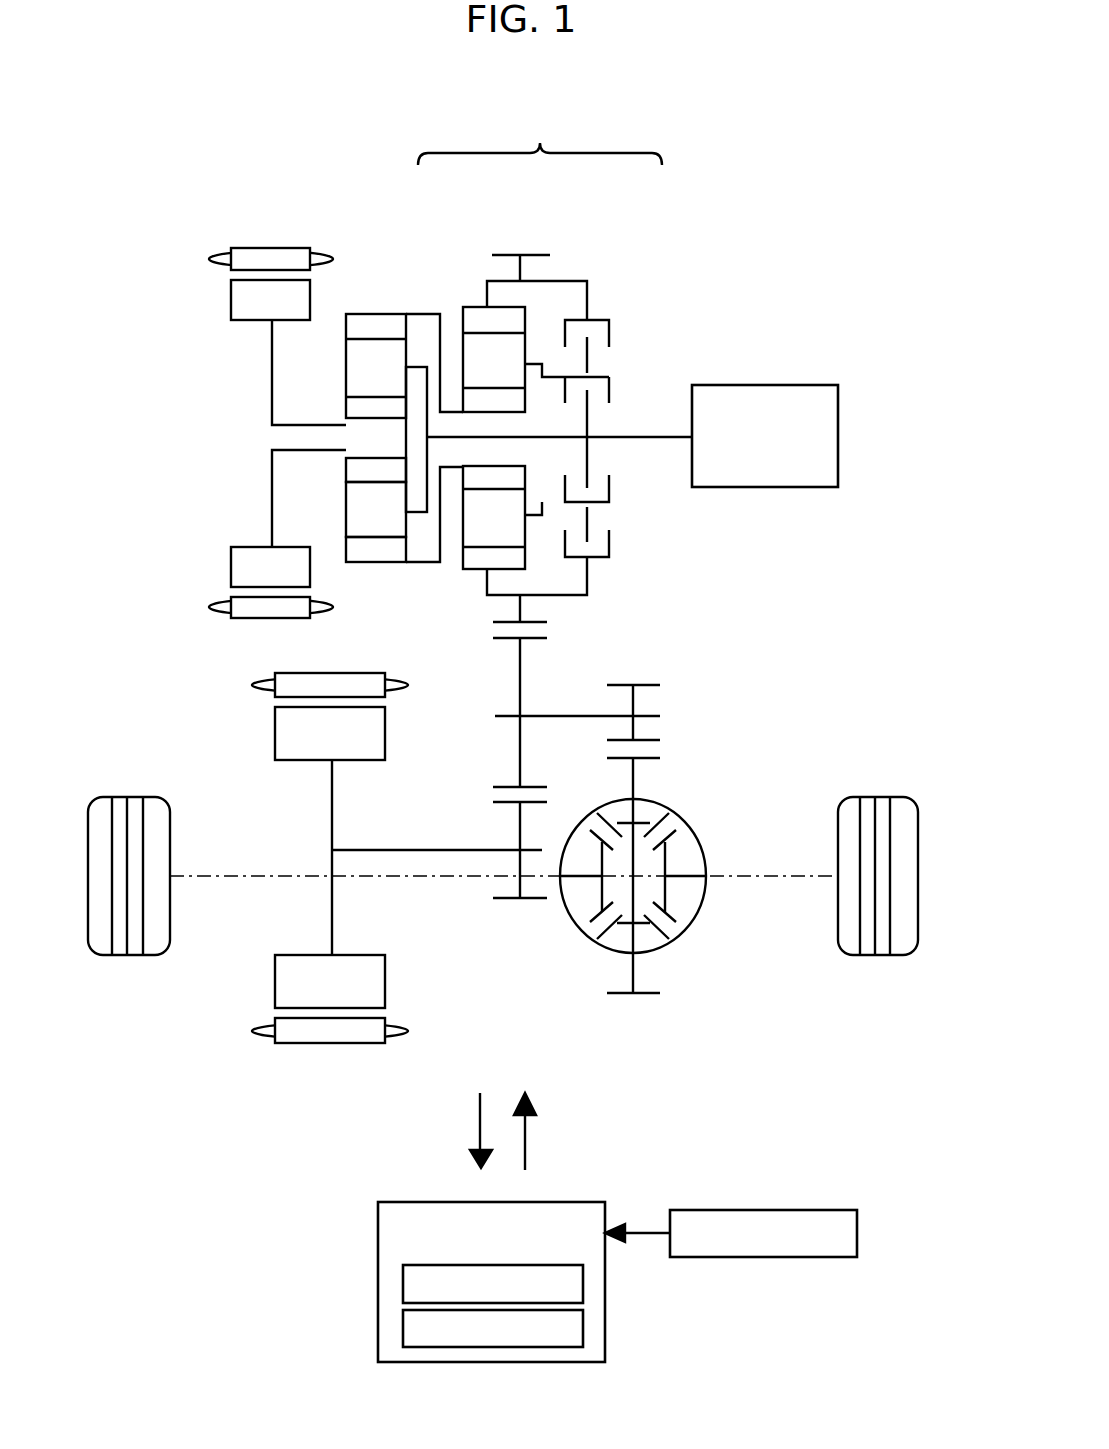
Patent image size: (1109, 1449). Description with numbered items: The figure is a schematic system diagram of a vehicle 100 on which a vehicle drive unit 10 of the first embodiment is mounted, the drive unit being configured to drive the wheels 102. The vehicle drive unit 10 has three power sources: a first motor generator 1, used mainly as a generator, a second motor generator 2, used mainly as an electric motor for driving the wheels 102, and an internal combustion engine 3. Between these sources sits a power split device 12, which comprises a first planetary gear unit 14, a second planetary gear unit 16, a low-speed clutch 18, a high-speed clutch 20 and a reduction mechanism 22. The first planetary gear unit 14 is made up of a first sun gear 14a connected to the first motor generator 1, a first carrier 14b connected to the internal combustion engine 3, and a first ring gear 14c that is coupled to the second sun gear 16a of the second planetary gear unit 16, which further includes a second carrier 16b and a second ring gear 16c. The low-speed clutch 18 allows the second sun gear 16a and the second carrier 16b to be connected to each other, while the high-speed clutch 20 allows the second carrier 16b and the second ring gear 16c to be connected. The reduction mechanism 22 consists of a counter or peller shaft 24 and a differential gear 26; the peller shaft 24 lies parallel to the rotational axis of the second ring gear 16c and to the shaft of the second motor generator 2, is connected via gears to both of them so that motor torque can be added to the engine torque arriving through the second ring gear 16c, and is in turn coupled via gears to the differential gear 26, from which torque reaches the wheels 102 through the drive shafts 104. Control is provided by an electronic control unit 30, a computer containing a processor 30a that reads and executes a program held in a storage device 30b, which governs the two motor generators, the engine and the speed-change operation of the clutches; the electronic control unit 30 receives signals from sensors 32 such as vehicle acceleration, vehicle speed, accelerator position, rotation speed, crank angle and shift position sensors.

The vehicle 100 is at (823, 157).
The vehicle drive unit 10 is at (767, 288).
The power split device 12 is at (540, 136).
The first motor generator 1 is at (241, 248).
The second motor generator 2 is at (275, 728).
The internal combustion engine 3 is at (818, 385).
The first planetary gear unit 14 is at (324, 369).
The first sun gear 14a is at (379, 459).
The first carrier 14b is at (370, 500).
The first ring gear 14c is at (372, 540).
The second planetary gear unit 16 is at (498, 537).
The second sun gear 16a is at (478, 403).
The second carrier 16b is at (476, 530).
The second ring gear 16c is at (486, 558).
The low-speed clutch 18 is at (615, 378).
The high-speed clutch 20 is at (602, 309).
The reduction mechanism 22 is at (653, 641).
The counter shaft (peller shaft) 24 is at (541, 713).
The differential gear 26 is at (668, 817).
The electronic control unit (ECU) 30 is at (475, 1227).
The processor 30a is at (403, 1288).
The storage device 30b is at (403, 1330).
The sensors 32 is at (838, 1210).
The wheels 102 is at (128, 798).
The drive shafts 104 is at (195, 873).